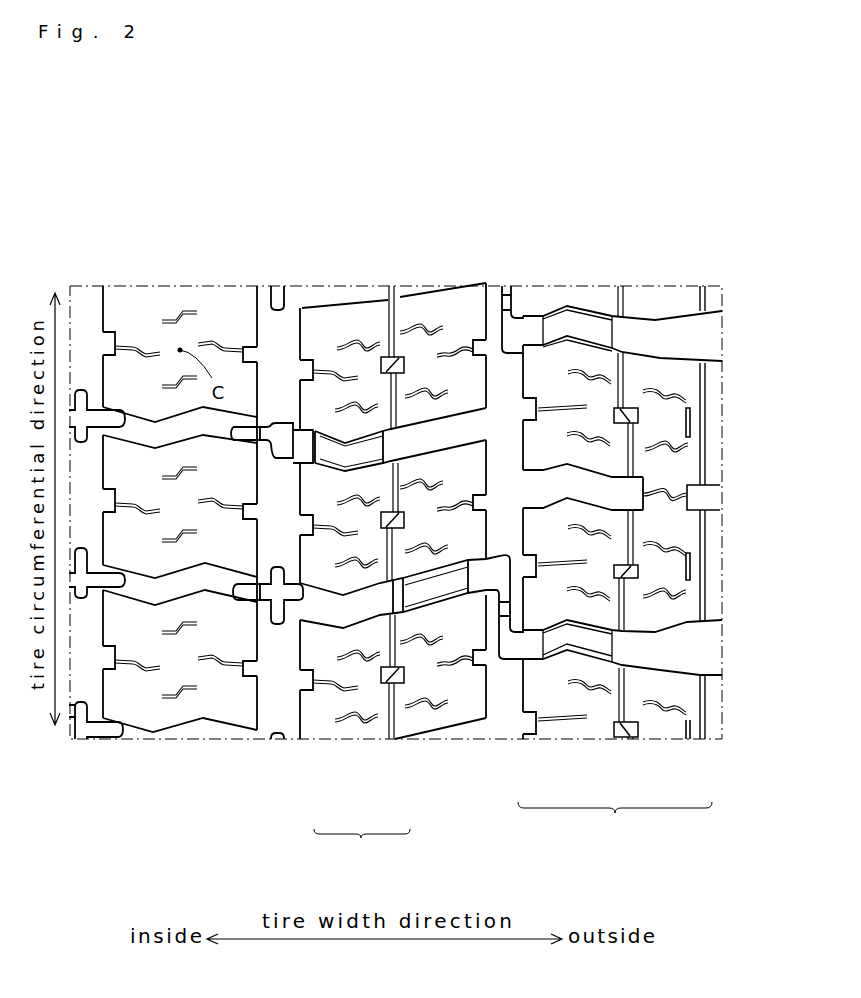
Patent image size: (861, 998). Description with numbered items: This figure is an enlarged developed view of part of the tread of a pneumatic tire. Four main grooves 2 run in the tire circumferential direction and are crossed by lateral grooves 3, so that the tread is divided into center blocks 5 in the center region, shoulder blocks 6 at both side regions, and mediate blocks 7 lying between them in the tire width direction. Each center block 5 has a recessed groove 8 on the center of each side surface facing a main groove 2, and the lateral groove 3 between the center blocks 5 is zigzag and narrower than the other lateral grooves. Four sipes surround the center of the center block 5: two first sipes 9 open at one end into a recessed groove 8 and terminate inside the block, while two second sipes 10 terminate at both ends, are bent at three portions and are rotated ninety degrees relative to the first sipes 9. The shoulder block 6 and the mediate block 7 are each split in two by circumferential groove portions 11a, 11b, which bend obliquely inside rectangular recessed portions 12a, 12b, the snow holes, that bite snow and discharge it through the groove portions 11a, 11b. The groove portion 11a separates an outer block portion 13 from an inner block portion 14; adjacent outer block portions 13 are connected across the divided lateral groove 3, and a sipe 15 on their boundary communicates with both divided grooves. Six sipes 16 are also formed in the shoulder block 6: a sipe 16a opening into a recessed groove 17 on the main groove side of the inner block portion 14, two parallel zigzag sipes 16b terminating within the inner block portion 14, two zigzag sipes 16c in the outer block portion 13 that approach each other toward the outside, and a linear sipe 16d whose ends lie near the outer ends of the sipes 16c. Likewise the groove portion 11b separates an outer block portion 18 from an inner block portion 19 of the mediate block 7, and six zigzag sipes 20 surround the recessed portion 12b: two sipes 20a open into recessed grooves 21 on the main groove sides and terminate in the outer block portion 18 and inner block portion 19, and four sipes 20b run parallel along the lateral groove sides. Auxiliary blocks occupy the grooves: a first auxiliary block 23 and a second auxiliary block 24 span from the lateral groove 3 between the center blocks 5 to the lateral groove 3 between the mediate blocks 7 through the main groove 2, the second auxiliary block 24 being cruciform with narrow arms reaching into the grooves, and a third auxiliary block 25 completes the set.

The main groove 2 is at (500, 380).
The lateral groove 3 is at (447, 427).
The center block 5 is at (120, 305).
The shoulder block 6 is at (560, 326).
The mediate block 7 is at (362, 312).
The recessed groove 8 is at (90, 335).
The first sipe 9 is at (150, 345).
The second sipe 10 is at (177, 316).
The groove portion 11a is at (610, 374).
The groove portion 11b is at (400, 327).
The recessed portion 12a is at (625, 406).
The recessed portion 12b is at (390, 357).
The outer block portion 13 is at (687, 525).
The inner block portion 14 is at (577, 355).
The sipe 15 is at (675, 492).
The sipe 16 is at (637, 488).
The sipe 16a is at (563, 560).
The sipe 16b is at (617, 632).
The sipe 16c is at (663, 560).
The sipe 16d is at (690, 560).
The recessed groove 17 is at (523, 580).
The outer block portion 18 is at (435, 557).
The inner block portion 19 is at (317, 568).
The sipe 20 is at (363, 503).
The sipe 20a is at (377, 560).
The sipe 20b is at (417, 560).
The recessed groove 21 is at (300, 525).
The first auxiliary block 23 is at (288, 443).
The second auxiliary block 24 is at (243, 592).
The third auxiliary block 25 is at (500, 670).